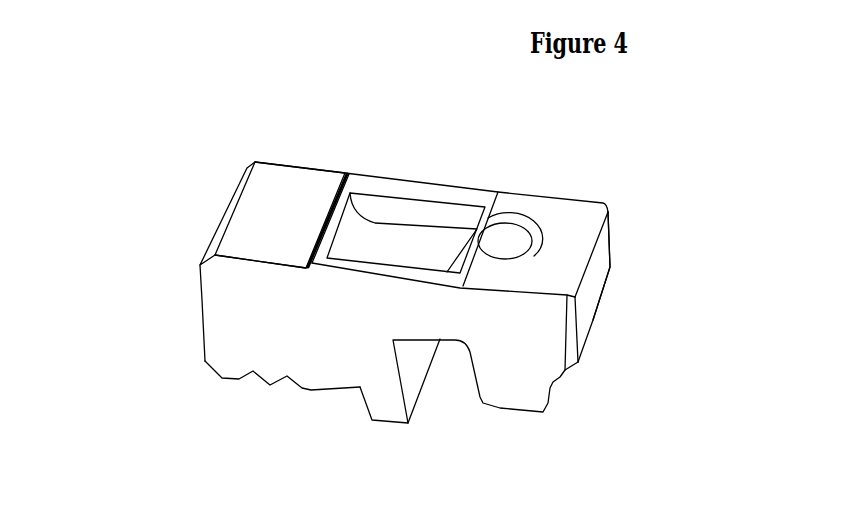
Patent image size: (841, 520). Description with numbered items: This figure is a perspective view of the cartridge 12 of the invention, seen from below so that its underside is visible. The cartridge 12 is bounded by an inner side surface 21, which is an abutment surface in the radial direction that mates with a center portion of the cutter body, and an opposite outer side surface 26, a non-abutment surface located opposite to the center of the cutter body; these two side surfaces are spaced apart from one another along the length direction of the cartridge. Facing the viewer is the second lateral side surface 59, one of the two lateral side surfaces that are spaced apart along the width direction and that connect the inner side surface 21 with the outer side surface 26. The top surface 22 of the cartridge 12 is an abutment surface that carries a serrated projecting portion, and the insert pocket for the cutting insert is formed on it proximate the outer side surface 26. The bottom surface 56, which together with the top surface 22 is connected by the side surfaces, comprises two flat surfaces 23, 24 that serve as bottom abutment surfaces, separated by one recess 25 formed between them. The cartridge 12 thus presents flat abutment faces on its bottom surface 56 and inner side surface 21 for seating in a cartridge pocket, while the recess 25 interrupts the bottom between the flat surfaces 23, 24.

The cartridge 12 is at (600, 407).
The inner side surface 21 is at (200, 305).
The top surface 22 is at (290, 384).
The flat surface 23 is at (293, 180).
The flat surface 24 is at (563, 212).
The recess 25 is at (406, 234).
The outer side surface 26 is at (595, 282).
The bottom surface 56 is at (266, 146).
The second lateral side surface 59 is at (250, 329).